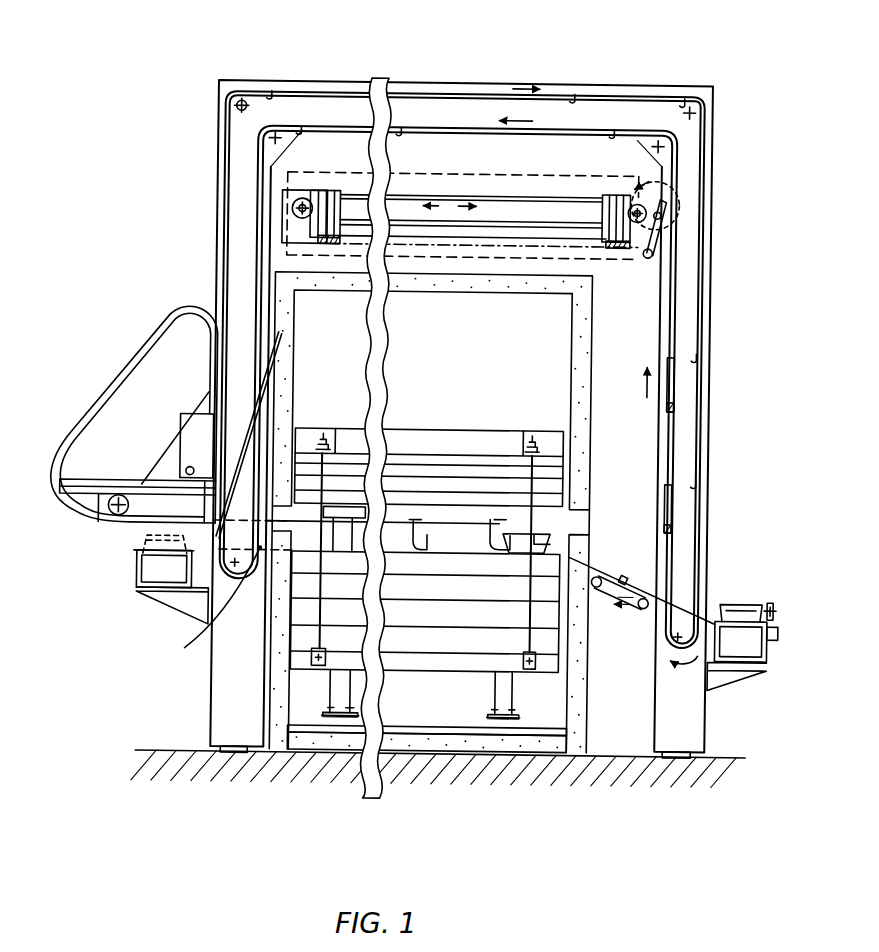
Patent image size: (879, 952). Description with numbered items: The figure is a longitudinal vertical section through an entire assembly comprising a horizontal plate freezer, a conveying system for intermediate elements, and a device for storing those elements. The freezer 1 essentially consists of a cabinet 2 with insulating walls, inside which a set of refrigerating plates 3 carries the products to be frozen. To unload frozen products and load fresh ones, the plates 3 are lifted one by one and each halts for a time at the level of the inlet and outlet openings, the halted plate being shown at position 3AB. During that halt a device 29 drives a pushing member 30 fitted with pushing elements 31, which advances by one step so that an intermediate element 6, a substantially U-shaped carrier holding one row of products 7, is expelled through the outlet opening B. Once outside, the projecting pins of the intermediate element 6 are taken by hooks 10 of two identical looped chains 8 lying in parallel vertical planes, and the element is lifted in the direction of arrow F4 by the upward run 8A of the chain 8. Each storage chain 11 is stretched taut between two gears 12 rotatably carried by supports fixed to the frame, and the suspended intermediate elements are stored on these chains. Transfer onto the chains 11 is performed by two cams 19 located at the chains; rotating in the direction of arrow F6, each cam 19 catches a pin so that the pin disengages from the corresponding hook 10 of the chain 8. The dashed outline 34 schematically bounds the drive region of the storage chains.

The freezer 1 is at (597, 323).
The cabinet 2 is at (590, 416).
The refrigerating plate 3 is at (469, 554).
The plate halt position 3AB is at (440, 480).
The intermediate element 6 is at (670, 247).
The products 7 is at (156, 546).
The chain 8 is at (295, 241).
The upward run of chain 8A is at (677, 447).
The hook 10 is at (574, 94).
The chain 11 is at (484, 210).
The gear 12 is at (299, 197).
The cam 19 is at (662, 190).
The pushing device 29 is at (94, 397).
The pushing member 30 is at (503, 529).
The pushing element 31 is at (423, 511).
The drive housing 34 is at (344, 171).
The outlet opening B is at (586, 534).
The lifting direction arrow F4 is at (629, 384).
The cam rotation arrow F6 is at (642, 175).